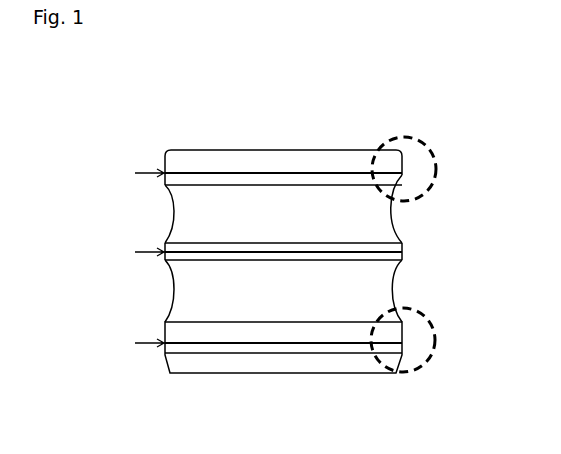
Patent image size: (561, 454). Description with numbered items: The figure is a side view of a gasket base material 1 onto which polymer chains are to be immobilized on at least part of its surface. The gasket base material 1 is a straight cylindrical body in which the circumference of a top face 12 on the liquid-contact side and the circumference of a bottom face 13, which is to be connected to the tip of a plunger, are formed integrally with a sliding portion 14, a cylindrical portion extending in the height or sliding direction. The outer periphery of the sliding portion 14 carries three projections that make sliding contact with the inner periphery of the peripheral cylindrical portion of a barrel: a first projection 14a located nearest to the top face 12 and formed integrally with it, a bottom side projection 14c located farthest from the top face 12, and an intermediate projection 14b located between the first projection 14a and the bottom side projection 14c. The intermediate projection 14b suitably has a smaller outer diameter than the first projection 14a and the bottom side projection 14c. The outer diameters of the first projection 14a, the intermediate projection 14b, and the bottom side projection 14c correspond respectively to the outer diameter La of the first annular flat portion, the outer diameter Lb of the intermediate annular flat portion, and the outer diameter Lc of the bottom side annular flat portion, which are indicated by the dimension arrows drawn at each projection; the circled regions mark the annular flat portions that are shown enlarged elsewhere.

The gasket base material 1 is at (170, 110).
The top face 12 is at (346, 150).
The bottom face 13 is at (342, 374).
The sliding portion 14 is at (80, 133).
The first projection 14a is at (165, 168).
The intermediate projection 14b is at (165, 246).
The bottom side projection 14c is at (165, 324).
The outer diameter of the first annular flat portion La is at (412, 177).
The outer diameter of the intermediate annular flat portion Lb is at (412, 256).
The outer diameter of the bottom side annular flat portion Lc is at (412, 347).